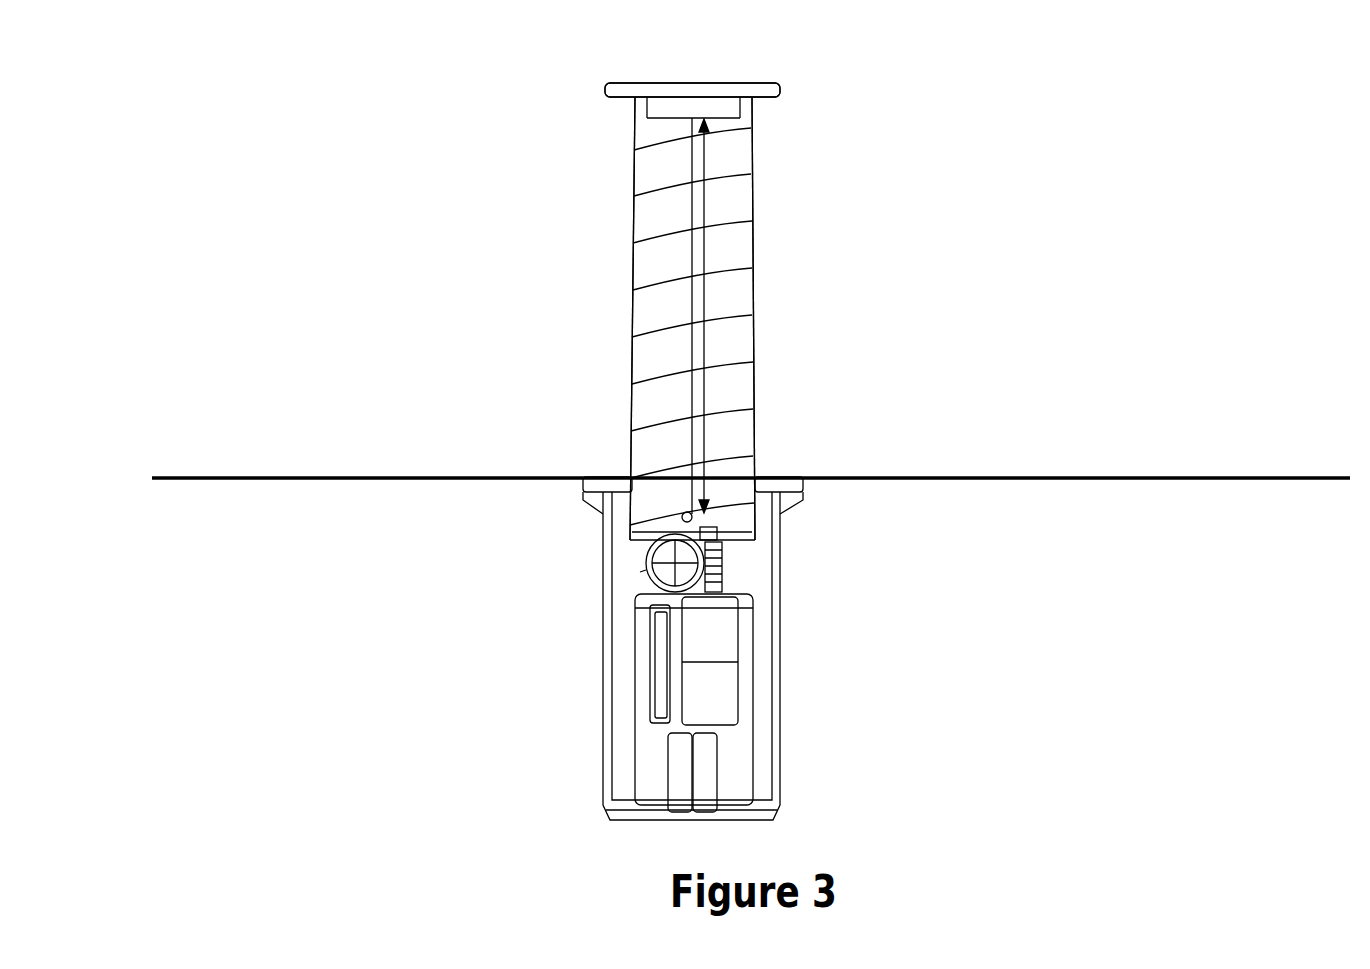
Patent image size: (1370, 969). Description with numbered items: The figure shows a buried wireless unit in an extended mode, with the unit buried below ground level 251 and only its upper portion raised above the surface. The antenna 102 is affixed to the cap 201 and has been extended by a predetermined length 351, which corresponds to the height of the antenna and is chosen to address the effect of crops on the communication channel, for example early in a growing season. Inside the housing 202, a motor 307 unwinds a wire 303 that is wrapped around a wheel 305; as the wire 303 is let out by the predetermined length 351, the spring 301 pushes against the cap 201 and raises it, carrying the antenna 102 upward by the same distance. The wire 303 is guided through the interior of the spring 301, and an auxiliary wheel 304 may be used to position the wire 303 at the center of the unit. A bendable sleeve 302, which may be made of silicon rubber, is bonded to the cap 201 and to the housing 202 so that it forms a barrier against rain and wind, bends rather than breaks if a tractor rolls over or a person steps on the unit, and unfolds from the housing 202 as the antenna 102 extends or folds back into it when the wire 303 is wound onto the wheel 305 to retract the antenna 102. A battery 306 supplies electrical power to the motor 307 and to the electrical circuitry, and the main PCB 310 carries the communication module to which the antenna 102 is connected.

The antenna 102 is at (732, 110).
The cap 201 is at (665, 78).
The housing 202 is at (785, 700).
The ground level 251 is at (913, 477).
The spring 301 is at (640, 247).
The bendable sleeve 302 is at (753, 327).
The wire 303 is at (690, 366).
The auxiliary wheel 304 is at (683, 513).
The wheel 305 is at (708, 560).
The battery 306 is at (670, 787).
The motor 307 is at (725, 640).
The main PCB 310 is at (652, 667).
The predetermined length 351 is at (705, 198).